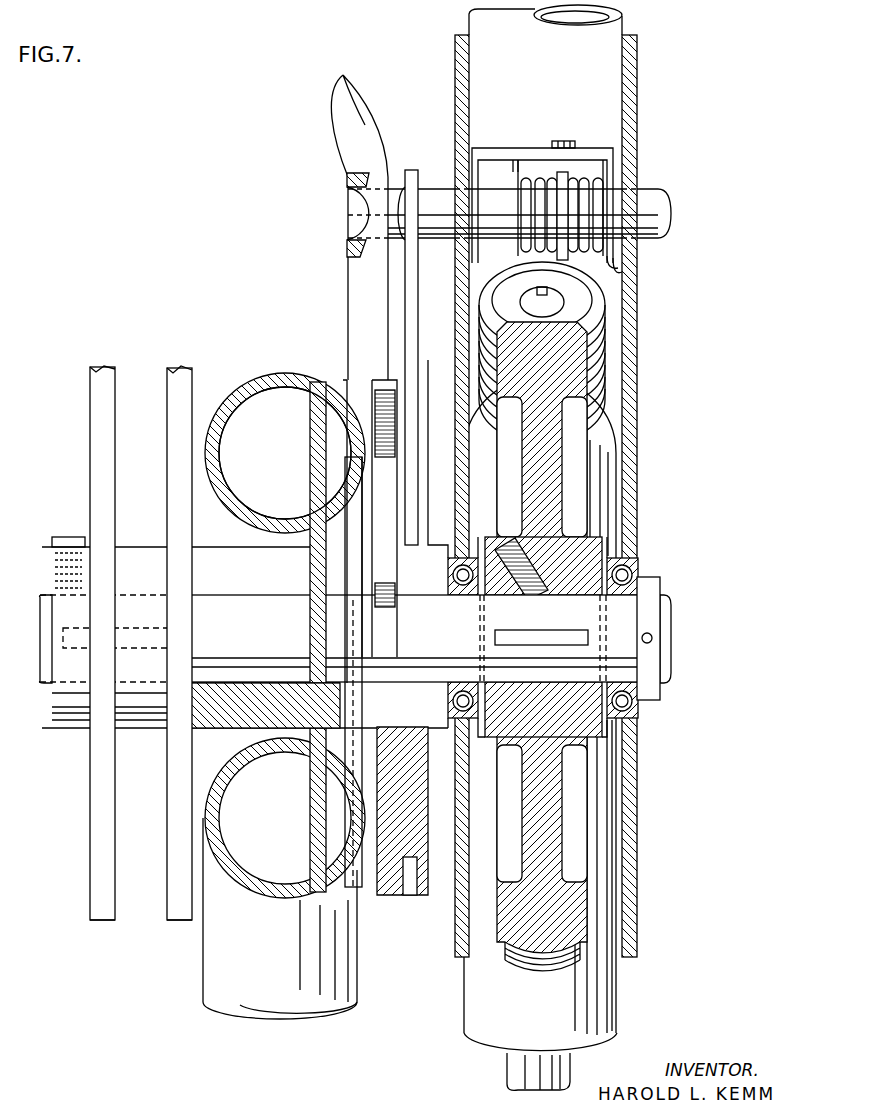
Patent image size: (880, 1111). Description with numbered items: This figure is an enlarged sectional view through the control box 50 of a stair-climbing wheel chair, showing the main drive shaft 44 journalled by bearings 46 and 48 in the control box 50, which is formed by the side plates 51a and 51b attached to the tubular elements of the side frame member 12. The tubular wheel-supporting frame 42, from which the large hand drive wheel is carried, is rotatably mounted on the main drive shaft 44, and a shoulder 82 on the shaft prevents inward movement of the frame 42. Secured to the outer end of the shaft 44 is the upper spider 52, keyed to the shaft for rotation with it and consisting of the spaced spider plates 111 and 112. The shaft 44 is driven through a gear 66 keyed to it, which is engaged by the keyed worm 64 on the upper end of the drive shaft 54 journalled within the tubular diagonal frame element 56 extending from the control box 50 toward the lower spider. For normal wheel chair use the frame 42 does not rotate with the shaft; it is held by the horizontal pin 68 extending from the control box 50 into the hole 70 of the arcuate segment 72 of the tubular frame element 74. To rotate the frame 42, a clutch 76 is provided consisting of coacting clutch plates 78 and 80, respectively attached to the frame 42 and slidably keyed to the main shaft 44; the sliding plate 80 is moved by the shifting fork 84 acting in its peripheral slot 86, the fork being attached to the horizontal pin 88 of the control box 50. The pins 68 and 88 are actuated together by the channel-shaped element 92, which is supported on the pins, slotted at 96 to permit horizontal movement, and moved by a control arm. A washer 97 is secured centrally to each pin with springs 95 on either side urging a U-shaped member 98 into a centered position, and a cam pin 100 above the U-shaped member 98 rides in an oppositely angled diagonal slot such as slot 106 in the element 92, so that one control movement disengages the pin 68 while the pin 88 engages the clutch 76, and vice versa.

The tubular side frame member 12 is at (460, 20).
The tubular wheel-supporting frame 42 is at (218, 1002).
The main drive shaft 44 is at (667, 640).
The bearing 46 is at (471, 553).
The bearing 48 is at (626, 705).
The control box 50 is at (541, 496).
The side plate 51a is at (455, 75).
The side plate 51b is at (637, 86).
The upper spider 52 is at (96, 916).
The drive shaft 54 is at (555, 307).
The tubular diagonal frame element 56 is at (607, 432).
The keyed worm 64 is at (607, 357).
The gear 66 is at (540, 946).
The horizontal pin 68 is at (360, 213).
The hole 70 is at (355, 250).
The arcuate segment 72 is at (352, 82).
The tubular frame element 74 is at (252, 375).
The clutch 76 is at (394, 893).
The clutch plate 78 is at (315, 432).
The clutch plate 80 is at (376, 382).
The shoulder 82 is at (345, 645).
The shifting fork 84 is at (416, 357).
The peripheral slot 86 is at (410, 897).
The horizontal pin 88 is at (428, 205).
The channel-shaped element 92 is at (603, 148).
The spring 95 is at (535, 178).
The slot 96 is at (616, 190).
The washer 97 is at (563, 248).
The U-shaped member 98 is at (618, 268).
The cam pin 100 is at (567, 143).
The diagonal slot 106 is at (515, 152).
The spider plate 111 is at (98, 372).
The spider plate 112 is at (178, 370).